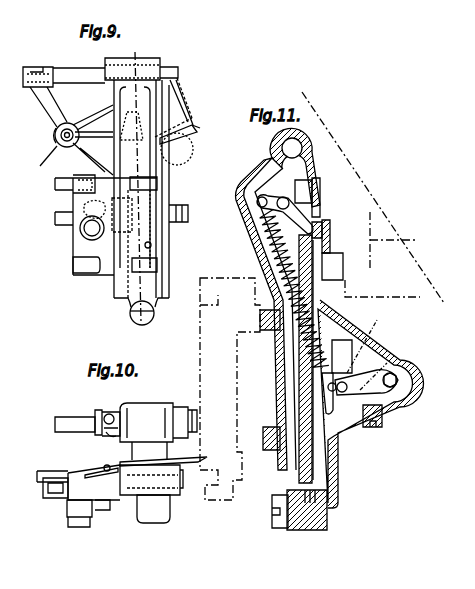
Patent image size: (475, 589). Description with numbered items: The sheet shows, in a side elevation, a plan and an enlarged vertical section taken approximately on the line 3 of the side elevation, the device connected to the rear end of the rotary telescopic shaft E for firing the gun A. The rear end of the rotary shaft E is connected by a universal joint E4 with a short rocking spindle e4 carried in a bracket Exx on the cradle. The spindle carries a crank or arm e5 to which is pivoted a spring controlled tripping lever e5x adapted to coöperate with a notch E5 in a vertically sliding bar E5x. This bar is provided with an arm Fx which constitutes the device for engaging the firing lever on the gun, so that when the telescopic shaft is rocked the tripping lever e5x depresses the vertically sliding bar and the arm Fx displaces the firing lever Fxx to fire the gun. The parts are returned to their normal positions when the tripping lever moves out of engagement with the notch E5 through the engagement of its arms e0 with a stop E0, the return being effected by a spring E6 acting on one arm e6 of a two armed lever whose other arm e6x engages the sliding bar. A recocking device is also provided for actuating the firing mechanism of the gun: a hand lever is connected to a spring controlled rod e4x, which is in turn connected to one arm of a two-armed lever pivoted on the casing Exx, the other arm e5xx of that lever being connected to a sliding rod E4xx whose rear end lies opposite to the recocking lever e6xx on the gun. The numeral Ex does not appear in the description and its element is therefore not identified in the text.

In FIG. 9, the section line 3 is at (138, 188).
In FIG. 11, the gun A is at (308, 124).
In FIG. 9, the rotary shaft E is at (68, 213).
In FIG. 10, the rotary shaft E is at (77, 473).
In FIG. 9, the valve lever arm Ex is at (42, 163).
In FIG. 9, the bracket Exx is at (85, 168).
In FIG. 10, the bracket Exx is at (158, 431).
In FIG. 11, the bracket Exx is at (290, 358).
In FIG. 9, the universal joint E4 is at (82, 228).
In FIG. 10, the universal joint E4 is at (100, 415).
In FIG. 10, the sliding rod E4xx is at (110, 490).
In FIG. 11, the notch E5 is at (328, 395).
In FIG. 9, the vertically sliding bar E5x is at (170, 168).
In FIG. 11, the vertically sliding bar E5x is at (317, 415).
In FIG. 11, the spring E6 is at (262, 233).
In FIG. 11, the stop E0 is at (380, 412).
In FIG. 9, the arm Fx is at (197, 130).
In FIG. 10, the arm Fx is at (190, 458).
In FIG. 11, the arm Fx is at (333, 245).
In FIG. 9, the firing lever Fxx is at (182, 110).
In FIG. 9, the short rocking spindle e4 is at (188, 213).
In FIG. 11, the short rocking spindle e4 is at (402, 380).
In FIG. 10, the spring controlled rod e4x is at (45, 475).
In FIG. 11, the crank or arm e5 is at (373, 373).
In FIG. 11, the tripping lever e5x is at (340, 395).
In FIG. 10, the arm of two-armed lever e5xx is at (83, 471).
In FIG. 11, the arm of two armed lever e6 is at (263, 198).
In FIG. 11, the arm of two armed lever e6x is at (297, 215).
In FIG. 9, the recocking lever e6xx is at (181, 87).
In FIG. 11, the arms of tripping lever e0 is at (355, 375).